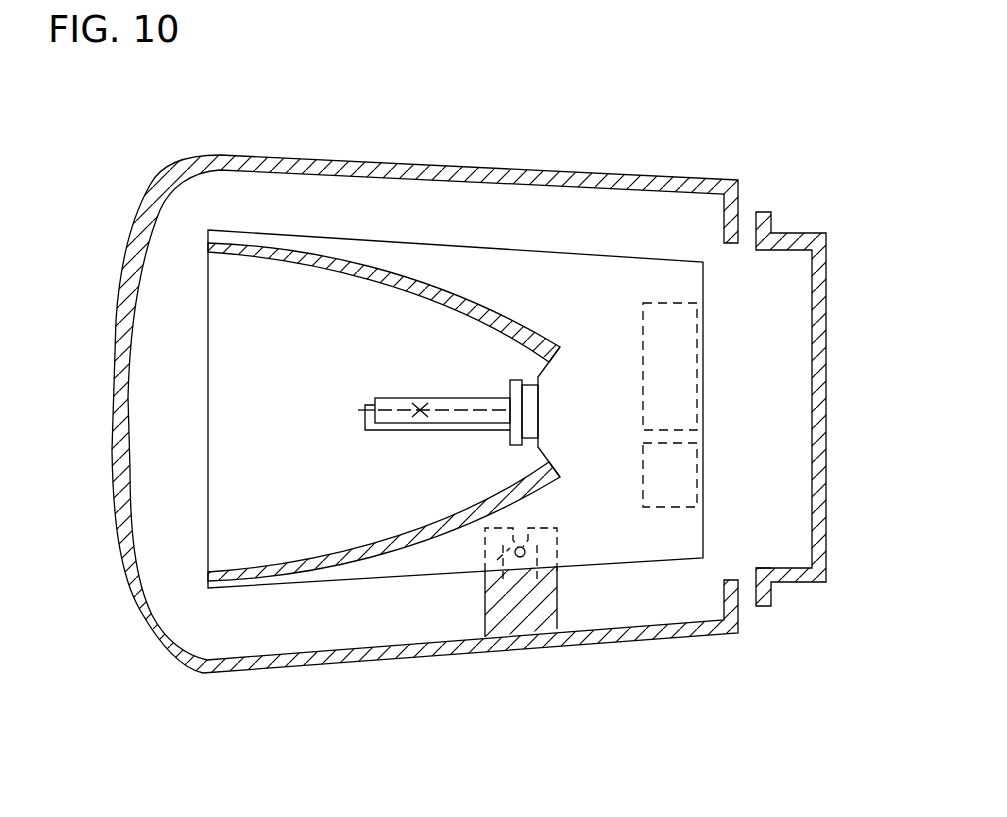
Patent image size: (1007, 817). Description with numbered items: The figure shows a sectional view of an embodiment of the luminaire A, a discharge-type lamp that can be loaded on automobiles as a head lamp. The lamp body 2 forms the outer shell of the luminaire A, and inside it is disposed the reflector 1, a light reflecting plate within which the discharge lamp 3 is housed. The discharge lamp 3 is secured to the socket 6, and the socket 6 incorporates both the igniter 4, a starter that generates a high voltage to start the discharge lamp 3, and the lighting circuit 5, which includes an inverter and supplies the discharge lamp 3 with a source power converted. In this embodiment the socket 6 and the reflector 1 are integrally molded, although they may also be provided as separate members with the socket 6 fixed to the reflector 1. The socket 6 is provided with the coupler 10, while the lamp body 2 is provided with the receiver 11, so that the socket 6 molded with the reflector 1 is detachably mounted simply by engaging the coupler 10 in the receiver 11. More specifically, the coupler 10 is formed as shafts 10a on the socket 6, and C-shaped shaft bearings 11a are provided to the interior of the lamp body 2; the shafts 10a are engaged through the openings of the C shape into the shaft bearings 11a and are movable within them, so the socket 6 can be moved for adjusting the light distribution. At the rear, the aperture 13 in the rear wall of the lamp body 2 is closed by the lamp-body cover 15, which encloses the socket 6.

The luminaire A is at (268, 143).
The reflector 1 is at (385, 258).
The lamp body 2 is at (345, 163).
The discharge lamp 3 is at (420, 404).
The igniter 4 is at (697, 465).
The lighting circuit 5 is at (697, 344).
The socket 6 is at (562, 287).
The coupler 10 is at (519, 558).
The shaft 10a is at (523, 556).
The receiver 11 is at (487, 573).
The C-shaped shaft bearing 11a is at (507, 556).
The aperture 13 is at (735, 561).
The lamp-body cover 15 is at (815, 402).